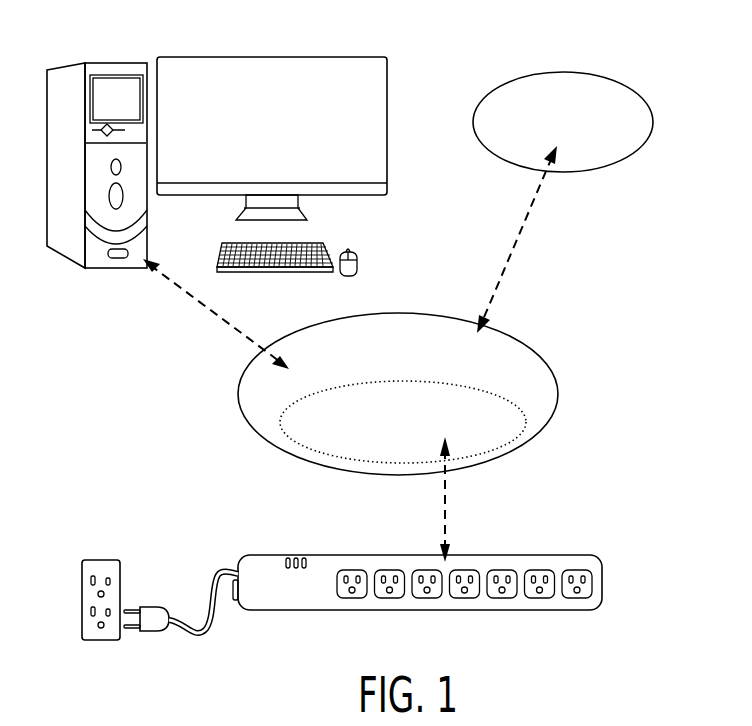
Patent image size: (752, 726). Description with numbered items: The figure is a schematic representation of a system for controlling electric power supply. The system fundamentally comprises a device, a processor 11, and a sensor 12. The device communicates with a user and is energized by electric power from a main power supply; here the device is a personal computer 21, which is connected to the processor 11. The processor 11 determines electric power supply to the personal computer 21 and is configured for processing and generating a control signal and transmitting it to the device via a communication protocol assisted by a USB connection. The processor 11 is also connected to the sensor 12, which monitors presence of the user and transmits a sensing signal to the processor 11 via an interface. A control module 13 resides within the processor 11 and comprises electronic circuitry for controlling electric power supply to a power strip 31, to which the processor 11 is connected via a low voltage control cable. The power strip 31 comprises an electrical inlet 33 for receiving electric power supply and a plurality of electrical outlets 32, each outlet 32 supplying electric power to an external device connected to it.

The processor 11 is at (523, 360).
The sensor 12 is at (636, 130).
The control module 13 is at (512, 427).
The personal computer 21 is at (157, 57).
The power strip 31 is at (590, 563).
The electrical outlet 32 is at (350, 599).
The electrical inlet 33 is at (153, 605).